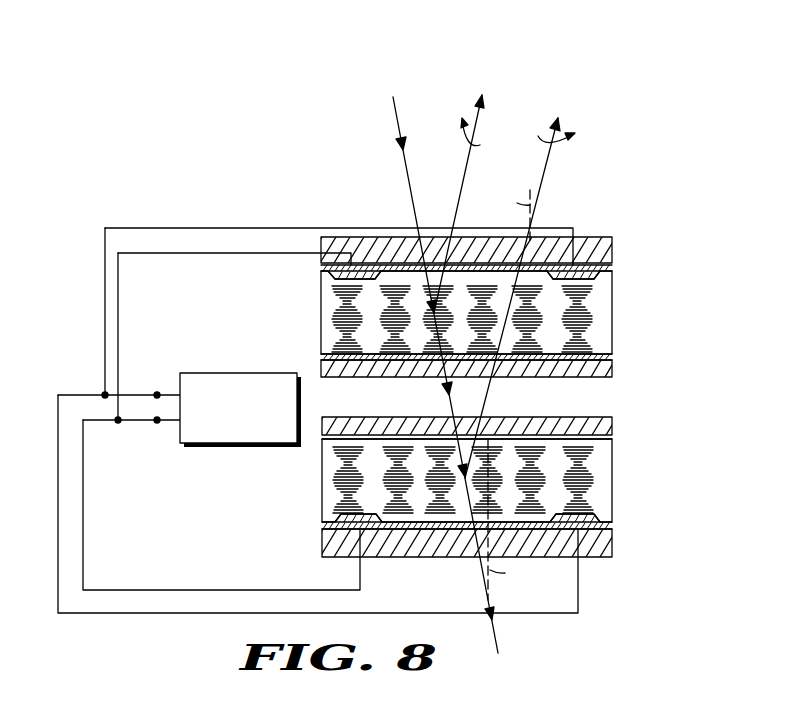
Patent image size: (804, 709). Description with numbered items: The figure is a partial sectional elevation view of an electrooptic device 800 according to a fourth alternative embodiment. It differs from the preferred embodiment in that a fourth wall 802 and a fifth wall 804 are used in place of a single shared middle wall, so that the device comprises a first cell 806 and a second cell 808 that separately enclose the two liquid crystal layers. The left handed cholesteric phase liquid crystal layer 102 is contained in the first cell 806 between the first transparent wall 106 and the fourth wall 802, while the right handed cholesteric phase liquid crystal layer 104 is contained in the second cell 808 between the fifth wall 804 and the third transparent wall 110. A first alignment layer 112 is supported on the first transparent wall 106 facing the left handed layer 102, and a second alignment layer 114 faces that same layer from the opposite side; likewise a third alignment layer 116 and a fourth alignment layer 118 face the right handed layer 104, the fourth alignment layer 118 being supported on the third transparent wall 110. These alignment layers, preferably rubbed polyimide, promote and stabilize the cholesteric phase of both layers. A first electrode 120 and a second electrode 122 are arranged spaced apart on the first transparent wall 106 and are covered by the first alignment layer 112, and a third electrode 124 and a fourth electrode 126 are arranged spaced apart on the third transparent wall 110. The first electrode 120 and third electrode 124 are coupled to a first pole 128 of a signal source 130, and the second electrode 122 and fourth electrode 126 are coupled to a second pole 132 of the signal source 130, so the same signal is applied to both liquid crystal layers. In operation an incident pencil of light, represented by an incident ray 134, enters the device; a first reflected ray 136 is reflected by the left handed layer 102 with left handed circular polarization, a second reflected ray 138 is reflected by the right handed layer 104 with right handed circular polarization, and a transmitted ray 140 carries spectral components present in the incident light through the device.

The electrooptic device 800 is at (163, 162).
The first cell 806 is at (297, 307).
The second cell 808 is at (297, 520).
The first transparent wall 106 is at (612, 236).
The first alignment layer 112 is at (612, 270).
The left handed cholesteric phase liquid crystal layer 102 is at (593, 327).
The second alignment layer 114 is at (597, 355).
The fourth wall 802 is at (612, 370).
The fifth wall 804 is at (612, 425).
The third alignment layer 116 is at (600, 441).
The right handed cholesteric phase liquid crystal layer 104 is at (593, 482).
The fourth alignment layer 118 is at (600, 514).
The third transparent wall 110 is at (613, 532).
The first electrode 120 is at (365, 263).
The second electrode 122 is at (580, 263).
The third electrode 124 is at (363, 532).
The fourth electrode 126 is at (588, 530).
The first pole 128 is at (178, 424).
The second pole 132 is at (178, 392).
The signal source 130 is at (239, 444).
The incident ray 134 is at (393, 110).
The first reflected ray 136 is at (475, 120).
The second reflected ray 138 is at (557, 120).
The transmitted ray 140 is at (498, 640).